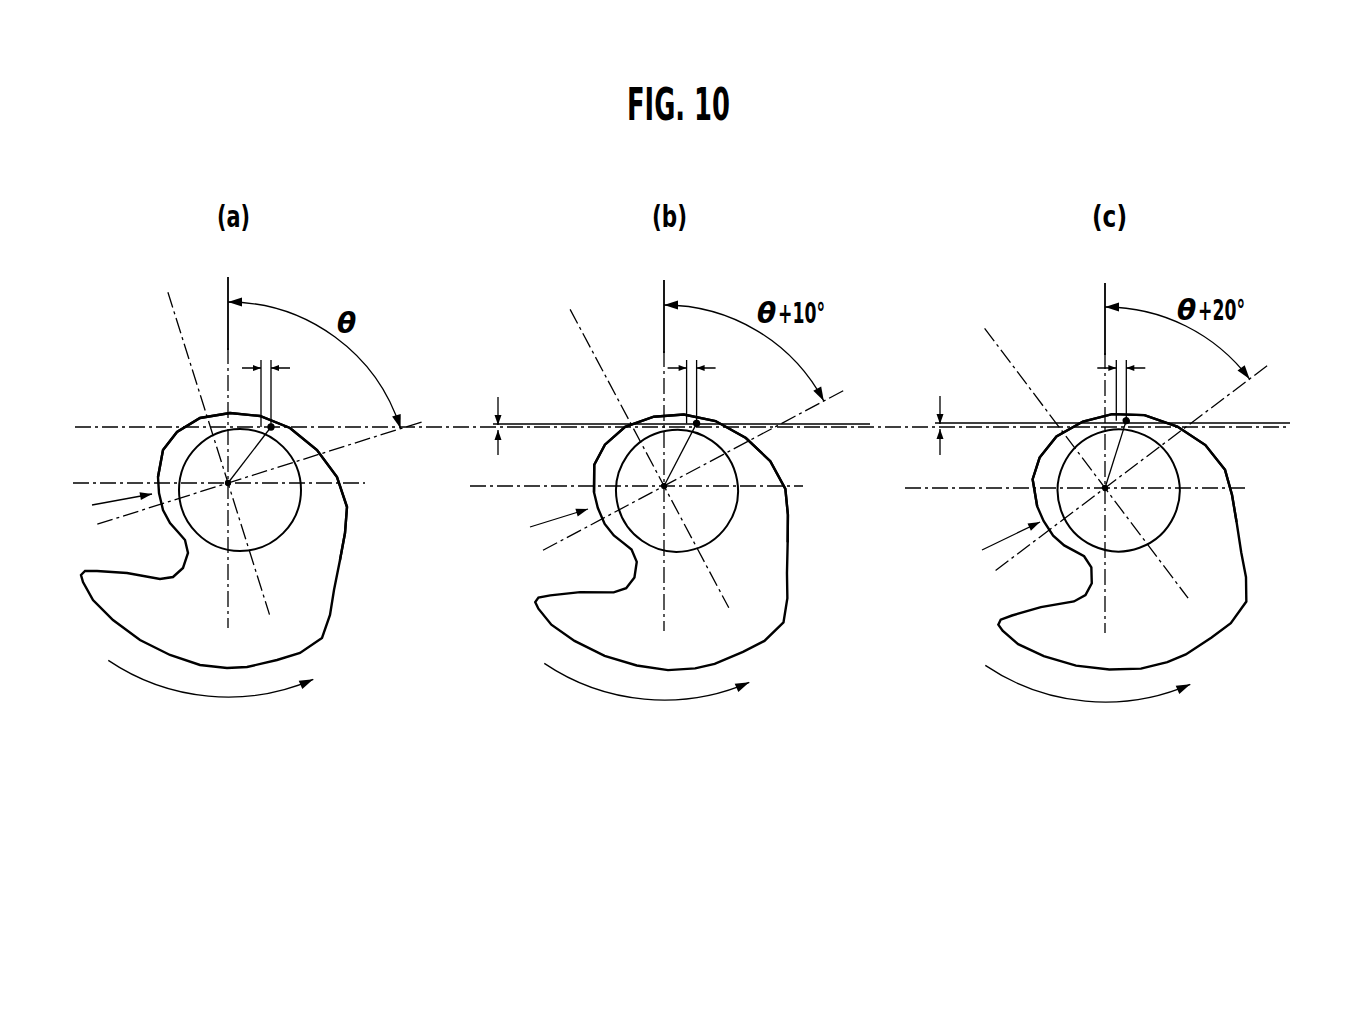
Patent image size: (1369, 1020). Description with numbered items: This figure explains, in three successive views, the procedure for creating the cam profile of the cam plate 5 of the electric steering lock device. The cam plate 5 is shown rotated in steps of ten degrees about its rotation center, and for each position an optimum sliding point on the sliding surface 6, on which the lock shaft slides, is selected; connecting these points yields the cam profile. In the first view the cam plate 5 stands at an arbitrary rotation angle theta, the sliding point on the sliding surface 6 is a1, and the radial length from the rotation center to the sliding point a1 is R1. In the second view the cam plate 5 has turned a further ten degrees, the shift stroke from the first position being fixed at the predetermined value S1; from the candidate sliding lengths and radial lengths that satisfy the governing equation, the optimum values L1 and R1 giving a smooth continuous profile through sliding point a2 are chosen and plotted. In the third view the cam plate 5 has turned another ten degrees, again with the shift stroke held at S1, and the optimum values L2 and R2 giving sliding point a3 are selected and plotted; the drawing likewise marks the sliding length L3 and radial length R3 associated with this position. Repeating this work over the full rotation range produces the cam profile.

The cam plate 5 is at (310, 593).
The sliding surface 6 is at (345, 535).
The radial length R1 is at (1078, 738).
The radial length R2 is at (542, 523).
The rotation direction R3 is at (992, 543).
The sliding length L1 is at (265, 360).
The sliding length L2 is at (691, 360).
The distance L3 is at (1122, 360).
The sliding point a1 is at (274, 424).
The sliding point a2 is at (700, 420).
The sliding point a3 is at (1130, 418).
The predetermined shift stroke value S1 is at (493, 425).